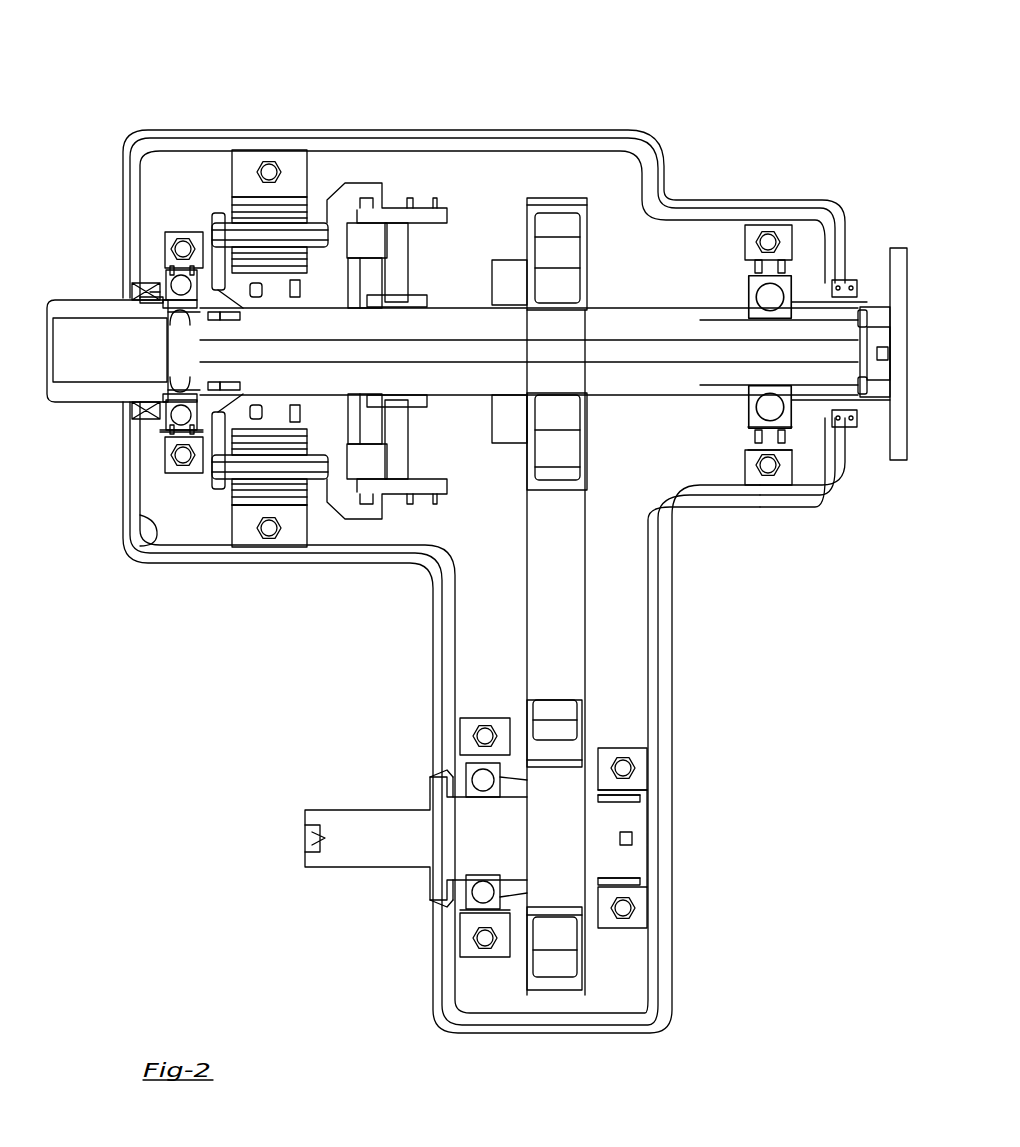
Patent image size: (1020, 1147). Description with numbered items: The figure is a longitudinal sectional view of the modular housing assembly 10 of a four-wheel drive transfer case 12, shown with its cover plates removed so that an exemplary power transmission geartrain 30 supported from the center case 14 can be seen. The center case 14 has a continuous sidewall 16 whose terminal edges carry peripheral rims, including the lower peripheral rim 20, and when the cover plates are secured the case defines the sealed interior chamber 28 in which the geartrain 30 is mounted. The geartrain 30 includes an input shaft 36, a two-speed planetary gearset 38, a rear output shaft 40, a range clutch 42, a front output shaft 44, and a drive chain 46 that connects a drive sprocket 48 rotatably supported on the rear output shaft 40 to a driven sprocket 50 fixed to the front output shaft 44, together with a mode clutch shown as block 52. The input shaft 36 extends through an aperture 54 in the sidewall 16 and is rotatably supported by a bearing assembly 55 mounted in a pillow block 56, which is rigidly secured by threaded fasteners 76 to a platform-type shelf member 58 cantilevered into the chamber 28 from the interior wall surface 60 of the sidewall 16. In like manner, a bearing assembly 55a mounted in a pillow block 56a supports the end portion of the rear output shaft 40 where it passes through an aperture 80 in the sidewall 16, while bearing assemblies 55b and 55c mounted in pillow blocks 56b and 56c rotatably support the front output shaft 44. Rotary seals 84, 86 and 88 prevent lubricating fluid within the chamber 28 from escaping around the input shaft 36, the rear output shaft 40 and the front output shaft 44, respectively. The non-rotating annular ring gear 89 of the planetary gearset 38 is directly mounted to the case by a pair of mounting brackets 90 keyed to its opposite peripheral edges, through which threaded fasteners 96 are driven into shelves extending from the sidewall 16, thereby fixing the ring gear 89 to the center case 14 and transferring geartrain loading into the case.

The modular housing assembly 10 is at (662, 125).
The four-wheel drive transfer case 12 is at (524, 80).
The center case 14 is at (593, 128).
The continuous sidewall 16 is at (680, 645).
The lower peripheral rim 20 is at (838, 485).
The sealed interior chamber 28 is at (654, 275).
The power transmission geartrain 30 is at (440, 168).
The input shaft 36 is at (65, 305).
The two-speed planetary gearset 38 is at (196, 168).
The rear output shaft 40 is at (440, 335).
The range clutch 42 is at (421, 418).
The front output shaft 44 is at (350, 820).
The drive chain 46 is at (565, 563).
The drive sprocket 48 is at (568, 455).
The driven sprocket 50 is at (592, 718).
The mode clutch 52 is at (508, 268).
The aperture 54 is at (160, 402).
The bearing assembly 55 is at (175, 290).
The bearing assembly 55a is at (794, 282).
The bearing assembly 55b is at (648, 800).
The bearing assembly 55c is at (483, 784).
The pillow block 56 is at (163, 438).
The pillow block 56a is at (749, 458).
The pillow block 56b is at (650, 772).
The pillow block 56c is at (460, 930).
The shelf member 58 is at (160, 197).
The interior wall surface 60 is at (146, 560).
The threaded fasteners 76 is at (185, 462).
The aperture 80 is at (880, 302).
The rotary seal 84 is at (150, 290).
The rotary seal 86 is at (852, 290).
The rotary seal 88 is at (437, 776).
The annular ring gear 89 is at (275, 128).
The mounting brackets 90 is at (317, 560).
The threaded fasteners 96 is at (243, 560).